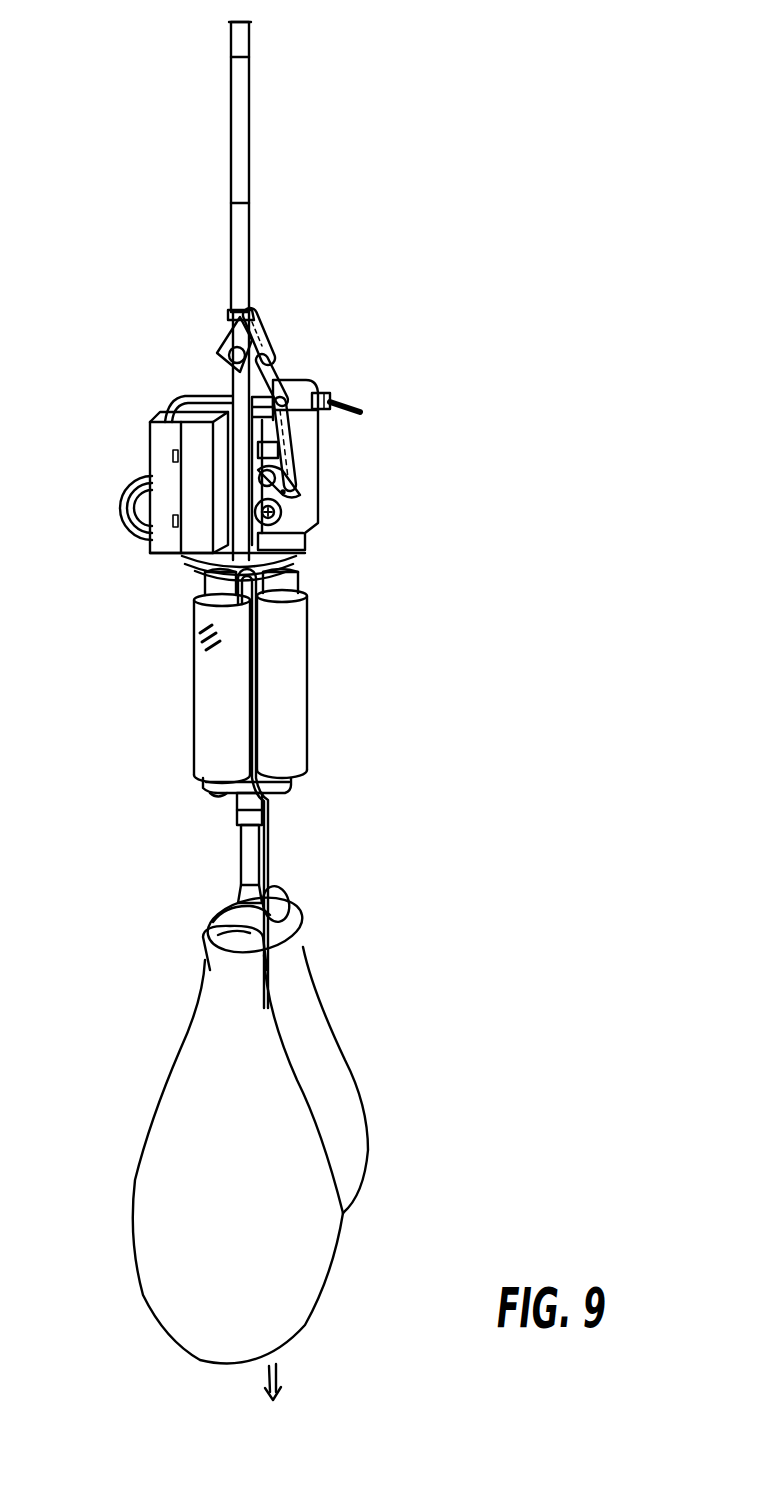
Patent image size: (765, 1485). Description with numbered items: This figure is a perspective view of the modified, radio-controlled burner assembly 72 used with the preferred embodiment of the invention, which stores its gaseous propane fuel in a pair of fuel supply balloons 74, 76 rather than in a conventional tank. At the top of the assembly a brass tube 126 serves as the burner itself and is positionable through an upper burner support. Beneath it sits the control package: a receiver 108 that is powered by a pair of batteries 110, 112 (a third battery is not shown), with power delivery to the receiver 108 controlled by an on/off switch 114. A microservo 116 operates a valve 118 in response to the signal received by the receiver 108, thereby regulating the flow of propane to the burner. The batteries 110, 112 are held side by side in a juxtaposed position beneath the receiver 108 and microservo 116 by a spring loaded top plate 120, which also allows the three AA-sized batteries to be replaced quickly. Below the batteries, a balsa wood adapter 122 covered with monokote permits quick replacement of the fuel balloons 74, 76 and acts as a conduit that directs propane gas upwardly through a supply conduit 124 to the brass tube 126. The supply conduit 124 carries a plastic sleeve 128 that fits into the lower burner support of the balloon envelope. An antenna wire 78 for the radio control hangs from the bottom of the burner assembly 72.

The burner assembly 72 is at (404, 731).
The fuel supply balloon 74 is at (143, 1142).
The fuel supply balloon 76 is at (370, 1113).
The antenna wire 78 is at (278, 1375).
The receiver 108 is at (148, 431).
The battery 110 is at (197, 653).
The battery 112 is at (297, 637).
The on/off switch 114 is at (328, 400).
The microservo 116 is at (318, 492).
The valve 118 is at (233, 327).
The spring loaded top plate 120 is at (300, 563).
The balsa wood adapter 122 is at (290, 887).
The supply conduit 124 is at (240, 840).
The brass tube 126 is at (248, 163).
The plastic sleeve 128 is at (236, 803).